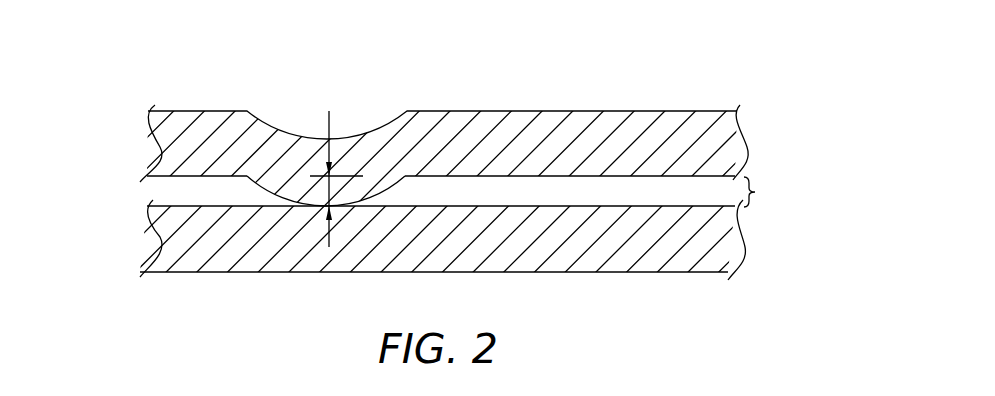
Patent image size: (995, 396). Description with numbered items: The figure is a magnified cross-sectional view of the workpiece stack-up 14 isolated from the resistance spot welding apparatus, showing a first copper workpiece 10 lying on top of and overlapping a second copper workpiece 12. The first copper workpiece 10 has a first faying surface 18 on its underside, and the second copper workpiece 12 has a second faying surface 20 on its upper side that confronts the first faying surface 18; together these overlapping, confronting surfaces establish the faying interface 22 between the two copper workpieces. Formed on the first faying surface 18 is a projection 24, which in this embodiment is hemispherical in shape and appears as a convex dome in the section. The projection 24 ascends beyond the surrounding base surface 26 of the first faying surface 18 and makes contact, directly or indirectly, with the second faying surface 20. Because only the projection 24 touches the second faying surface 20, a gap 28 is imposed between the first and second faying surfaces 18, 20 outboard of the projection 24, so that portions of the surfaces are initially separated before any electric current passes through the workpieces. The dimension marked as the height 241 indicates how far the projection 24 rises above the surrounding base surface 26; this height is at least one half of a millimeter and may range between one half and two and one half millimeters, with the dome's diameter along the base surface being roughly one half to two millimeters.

The first copper workpiece 10 is at (180, 98).
The second copper workpiece 12 is at (164, 284).
The workpiece stack-up 14 is at (795, 168).
The first faying surface 18 is at (582, 177).
The second faying surface 20 is at (545, 205).
The faying interface 22 is at (133, 191).
The projection 24 is at (263, 188).
The height 241 is at (330, 122).
The surrounding base surface 26 is at (178, 176).
The gap 28 is at (755, 192).